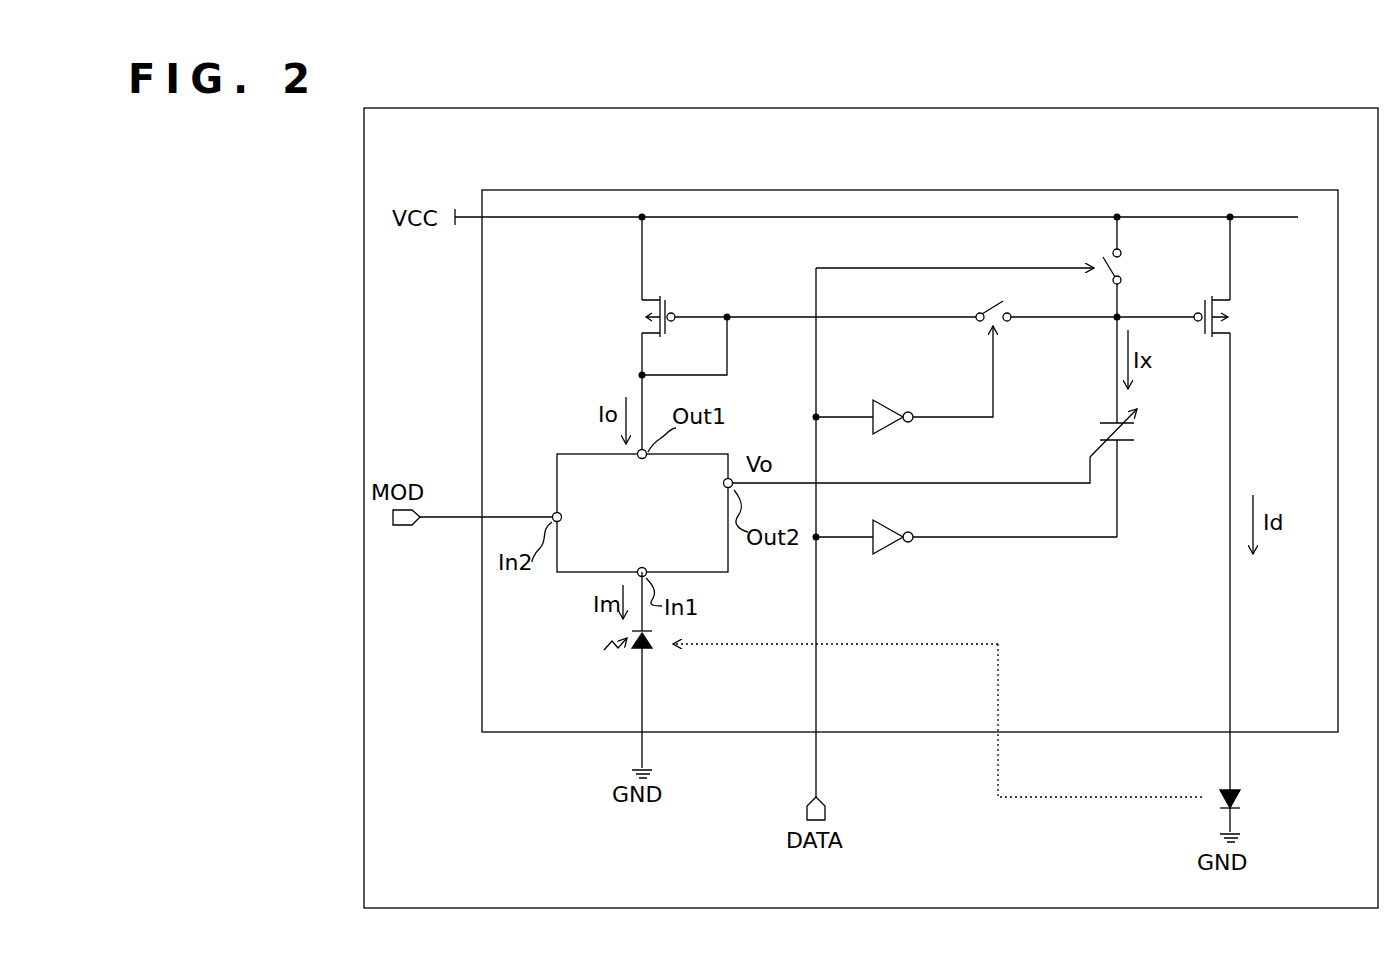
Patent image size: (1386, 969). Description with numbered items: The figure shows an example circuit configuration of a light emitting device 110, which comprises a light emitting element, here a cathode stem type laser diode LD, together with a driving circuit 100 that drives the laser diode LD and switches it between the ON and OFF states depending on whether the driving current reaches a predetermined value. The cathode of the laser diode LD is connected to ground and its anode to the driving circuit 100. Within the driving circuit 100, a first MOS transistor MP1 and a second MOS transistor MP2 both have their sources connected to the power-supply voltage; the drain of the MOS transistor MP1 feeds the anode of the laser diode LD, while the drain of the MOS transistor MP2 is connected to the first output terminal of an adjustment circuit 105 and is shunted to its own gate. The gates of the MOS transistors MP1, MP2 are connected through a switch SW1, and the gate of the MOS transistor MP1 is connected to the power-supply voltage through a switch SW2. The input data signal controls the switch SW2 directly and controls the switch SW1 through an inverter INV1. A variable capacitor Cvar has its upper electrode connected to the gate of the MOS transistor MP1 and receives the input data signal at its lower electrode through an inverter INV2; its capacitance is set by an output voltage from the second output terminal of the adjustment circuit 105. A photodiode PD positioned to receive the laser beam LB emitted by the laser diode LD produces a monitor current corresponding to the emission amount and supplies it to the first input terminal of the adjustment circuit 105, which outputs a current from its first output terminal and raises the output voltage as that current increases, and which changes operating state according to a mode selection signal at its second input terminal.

The light emitting device 110 is at (1013, 108).
The driving circuit 100 is at (1075, 190).
The adjustment circuit 105 is at (566, 454).
The MOS transistor MP1 is at (1240, 320).
The MOS transistor MP2 is at (660, 298).
The switch SW1 is at (1005, 325).
The switch SW2 is at (1130, 268).
The inverter INV1 is at (892, 424).
The inverter INV2 is at (892, 544).
The variable capacitor Cvar is at (1130, 438).
The photodiode PD is at (658, 650).
The laser diode LD is at (1245, 805).
The laser beam LB is at (1030, 798).